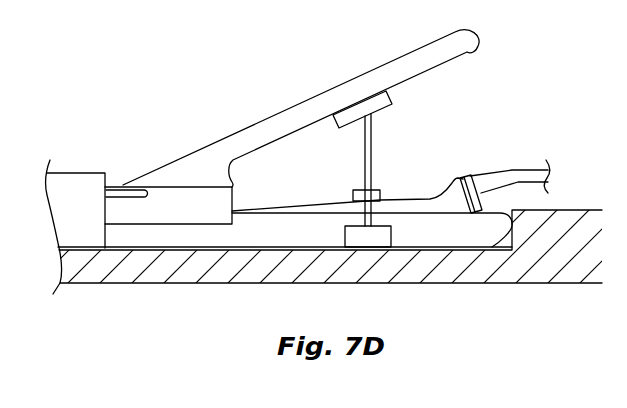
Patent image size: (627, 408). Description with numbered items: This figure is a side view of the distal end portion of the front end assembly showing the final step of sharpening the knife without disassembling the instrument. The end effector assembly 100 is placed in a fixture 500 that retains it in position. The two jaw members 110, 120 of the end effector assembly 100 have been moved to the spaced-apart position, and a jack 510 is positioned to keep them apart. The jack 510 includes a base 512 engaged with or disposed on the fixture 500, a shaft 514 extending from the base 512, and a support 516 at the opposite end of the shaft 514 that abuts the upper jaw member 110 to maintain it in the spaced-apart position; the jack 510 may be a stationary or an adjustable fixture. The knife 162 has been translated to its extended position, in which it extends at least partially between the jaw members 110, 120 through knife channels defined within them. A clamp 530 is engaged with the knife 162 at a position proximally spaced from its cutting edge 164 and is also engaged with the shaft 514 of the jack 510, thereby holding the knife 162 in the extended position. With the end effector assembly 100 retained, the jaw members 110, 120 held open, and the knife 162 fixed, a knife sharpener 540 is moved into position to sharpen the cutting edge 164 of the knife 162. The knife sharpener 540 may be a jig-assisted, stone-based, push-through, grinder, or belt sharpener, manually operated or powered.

The end effector assembly 100 is at (210, 131).
The jaw member 110 is at (473, 43).
The jaw member 120 is at (458, 233).
The knife 162 is at (312, 213).
The cutting edge 164 is at (477, 182).
The fixture 500 is at (578, 260).
The jack 510 is at (373, 172).
The base 512 is at (358, 238).
The shaft 514 is at (362, 157).
The support 516 is at (368, 108).
The clamp 530 is at (380, 198).
The knife sharpener 540 is at (469, 215).